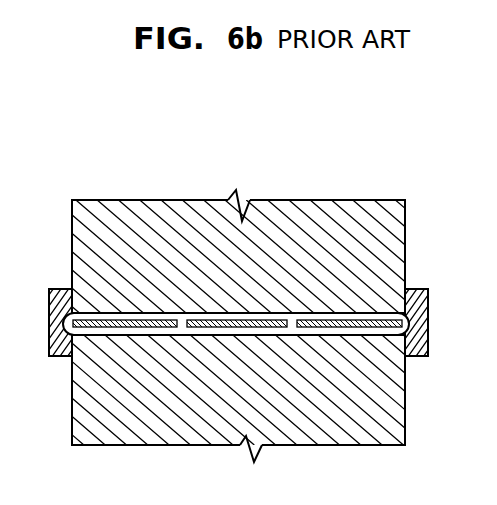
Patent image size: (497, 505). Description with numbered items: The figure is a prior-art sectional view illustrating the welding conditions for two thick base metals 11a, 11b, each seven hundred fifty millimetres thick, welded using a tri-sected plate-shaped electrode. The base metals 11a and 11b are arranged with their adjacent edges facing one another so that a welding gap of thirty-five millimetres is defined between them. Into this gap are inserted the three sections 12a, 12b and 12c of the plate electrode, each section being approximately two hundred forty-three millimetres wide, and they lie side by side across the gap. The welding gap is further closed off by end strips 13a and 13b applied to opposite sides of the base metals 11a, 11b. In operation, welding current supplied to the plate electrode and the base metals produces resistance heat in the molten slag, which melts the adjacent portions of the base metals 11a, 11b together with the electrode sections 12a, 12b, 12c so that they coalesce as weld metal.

The base metal 11a is at (190, 436).
The base metal 11b is at (184, 212).
The electrode section 12a is at (125, 328).
The electrode section 12b is at (240, 328).
The electrode section 12c is at (345, 328).
The end strip 13a is at (54, 357).
The end strip 13b is at (418, 358).